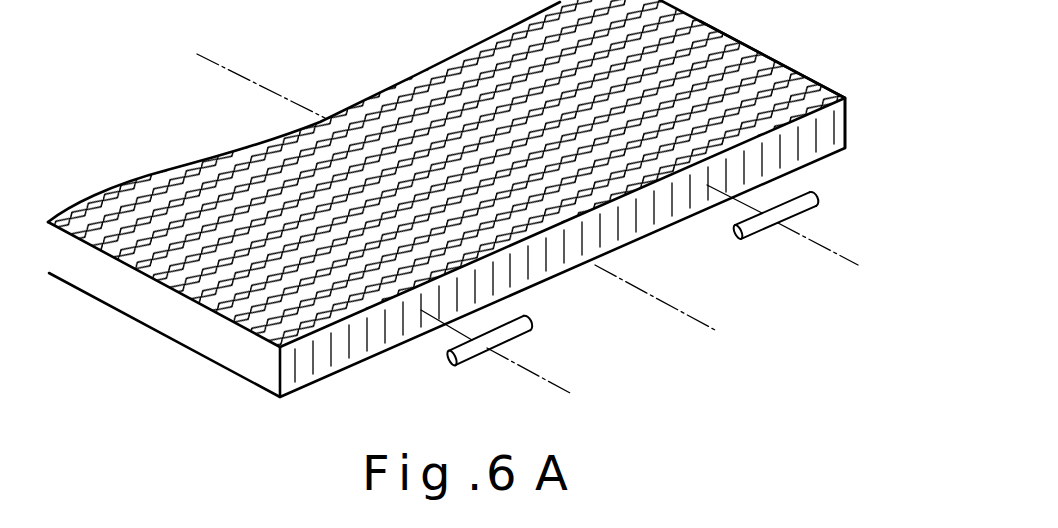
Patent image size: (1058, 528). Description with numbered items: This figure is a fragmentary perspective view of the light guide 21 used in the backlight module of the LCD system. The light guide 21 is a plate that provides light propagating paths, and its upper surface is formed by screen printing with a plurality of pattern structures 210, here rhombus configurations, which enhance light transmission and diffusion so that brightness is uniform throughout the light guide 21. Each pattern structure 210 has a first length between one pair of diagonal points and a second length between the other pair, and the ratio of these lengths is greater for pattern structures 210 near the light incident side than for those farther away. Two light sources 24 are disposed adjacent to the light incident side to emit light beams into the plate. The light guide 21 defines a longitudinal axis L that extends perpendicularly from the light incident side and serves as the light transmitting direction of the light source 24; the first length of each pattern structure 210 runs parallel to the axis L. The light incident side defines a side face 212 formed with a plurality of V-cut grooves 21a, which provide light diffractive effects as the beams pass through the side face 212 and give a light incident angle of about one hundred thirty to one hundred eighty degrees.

The light guide 21 is at (237, 356).
The pattern structures 210 is at (167, 183).
The side face 212 is at (294, 376).
The V-cut grooves 21a is at (837, 127).
The light source 24 is at (522, 329).
The longitudinal axis L is at (492, 205).